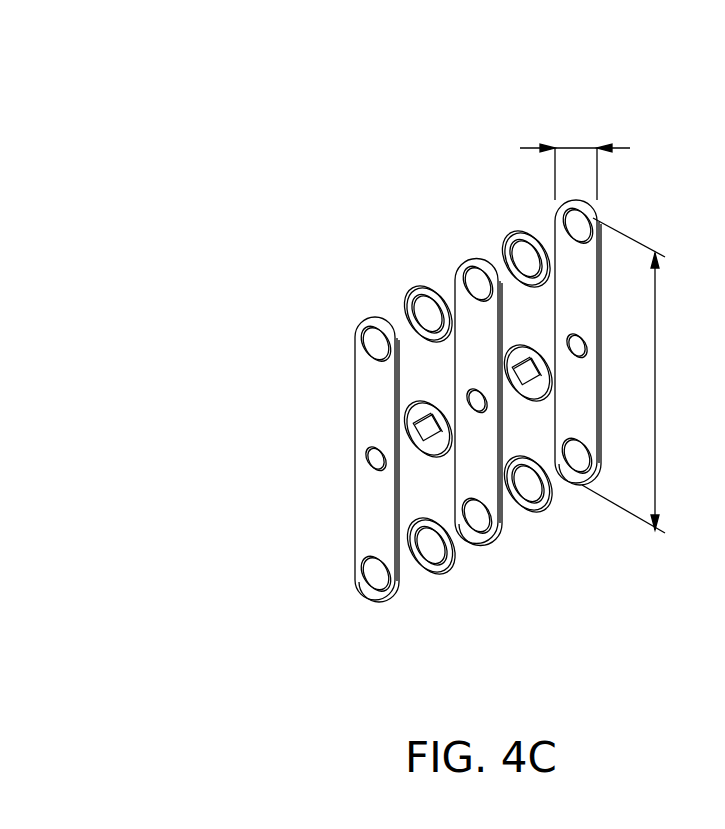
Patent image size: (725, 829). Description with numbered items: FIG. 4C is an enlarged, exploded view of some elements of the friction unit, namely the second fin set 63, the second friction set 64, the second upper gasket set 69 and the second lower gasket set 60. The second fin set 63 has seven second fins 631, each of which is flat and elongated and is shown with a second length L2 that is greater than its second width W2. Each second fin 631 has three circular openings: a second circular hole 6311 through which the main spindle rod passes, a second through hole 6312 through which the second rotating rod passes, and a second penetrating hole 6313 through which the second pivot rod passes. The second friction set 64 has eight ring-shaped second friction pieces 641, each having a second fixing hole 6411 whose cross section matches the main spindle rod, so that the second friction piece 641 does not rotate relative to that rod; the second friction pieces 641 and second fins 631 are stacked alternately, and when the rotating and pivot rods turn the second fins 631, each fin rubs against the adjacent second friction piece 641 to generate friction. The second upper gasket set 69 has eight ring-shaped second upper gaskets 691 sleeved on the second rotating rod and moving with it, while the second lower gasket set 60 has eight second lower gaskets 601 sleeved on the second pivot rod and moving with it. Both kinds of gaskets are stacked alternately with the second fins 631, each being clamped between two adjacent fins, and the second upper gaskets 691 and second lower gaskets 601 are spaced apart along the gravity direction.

The second fin set 63 is at (255, 300).
The second fin 631 is at (358, 322).
The second through hole 6312 is at (375, 343).
The second circular hole 6311 is at (375, 458).
The second penetrating hole 6313 is at (375, 573).
The second upper gasket set 69 is at (535, 95).
The second upper gasket 691 is at (433, 297).
The second lower gasket set 60 is at (580, 655).
The second lower gasket 601 is at (447, 552).
The second friction set 64 is at (437, 214).
The second friction piece 641 is at (425, 412).
The second fixing hole 6411 is at (420, 424).
The second width W2 is at (575, 161).
The second length L2 is at (635, 375).